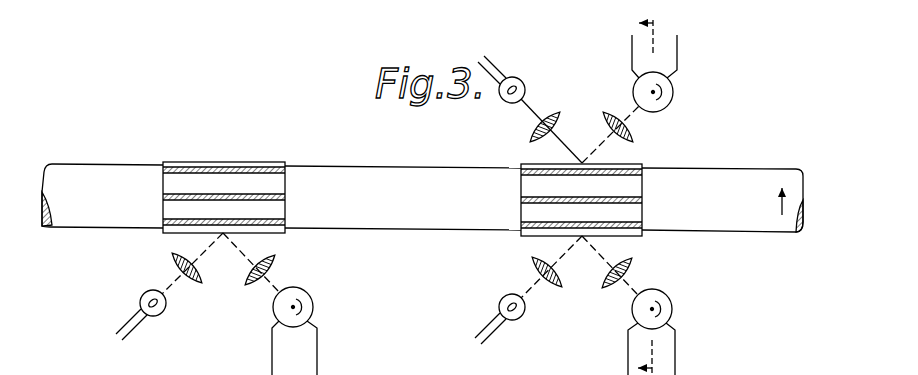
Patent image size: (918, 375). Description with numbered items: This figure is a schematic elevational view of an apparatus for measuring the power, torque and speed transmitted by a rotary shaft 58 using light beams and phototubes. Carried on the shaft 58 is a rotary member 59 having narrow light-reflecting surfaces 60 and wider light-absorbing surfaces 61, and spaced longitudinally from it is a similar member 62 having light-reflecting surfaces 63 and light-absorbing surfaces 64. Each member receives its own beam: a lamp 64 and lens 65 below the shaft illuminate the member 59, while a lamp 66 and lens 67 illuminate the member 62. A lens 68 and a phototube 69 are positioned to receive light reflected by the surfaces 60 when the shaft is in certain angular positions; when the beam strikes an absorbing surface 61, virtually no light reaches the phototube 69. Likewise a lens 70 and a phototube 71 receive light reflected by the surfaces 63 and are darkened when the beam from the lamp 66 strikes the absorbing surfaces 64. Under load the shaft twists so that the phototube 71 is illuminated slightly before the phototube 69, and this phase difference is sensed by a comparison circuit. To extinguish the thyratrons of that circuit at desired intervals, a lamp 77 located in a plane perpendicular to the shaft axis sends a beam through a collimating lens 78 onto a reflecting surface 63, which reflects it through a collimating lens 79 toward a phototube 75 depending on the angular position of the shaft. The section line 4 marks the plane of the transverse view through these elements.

The section line 4- 4 is at (653, 188).
The rotary shaft 58 is at (412, 222).
The rotary member 59 is at (223, 181).
The light-reflecting surfaces 60 is at (285, 170).
The light-absorbing surfaces 61 is at (176, 182).
The rotary member 62 is at (581, 189).
The light-reflecting surfaces 63 is at (526, 157).
The lamp 64 is at (160, 316).
The lens 65 is at (196, 283).
The lamp 66 is at (520, 319).
The lens 67 is at (555, 288).
The lens 68 is at (277, 262).
The phototube 69 is at (313, 304).
The lens 70 is at (636, 268).
The phototube 71 is at (672, 305).
The phototube 75 is at (673, 90).
The lamp 77 is at (520, 78).
The collimating lens 78 is at (553, 113).
The collimating lens 79 is at (640, 130).